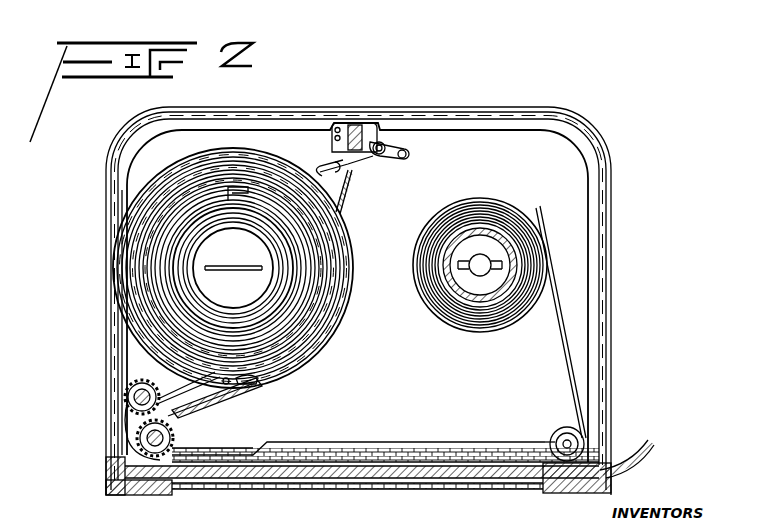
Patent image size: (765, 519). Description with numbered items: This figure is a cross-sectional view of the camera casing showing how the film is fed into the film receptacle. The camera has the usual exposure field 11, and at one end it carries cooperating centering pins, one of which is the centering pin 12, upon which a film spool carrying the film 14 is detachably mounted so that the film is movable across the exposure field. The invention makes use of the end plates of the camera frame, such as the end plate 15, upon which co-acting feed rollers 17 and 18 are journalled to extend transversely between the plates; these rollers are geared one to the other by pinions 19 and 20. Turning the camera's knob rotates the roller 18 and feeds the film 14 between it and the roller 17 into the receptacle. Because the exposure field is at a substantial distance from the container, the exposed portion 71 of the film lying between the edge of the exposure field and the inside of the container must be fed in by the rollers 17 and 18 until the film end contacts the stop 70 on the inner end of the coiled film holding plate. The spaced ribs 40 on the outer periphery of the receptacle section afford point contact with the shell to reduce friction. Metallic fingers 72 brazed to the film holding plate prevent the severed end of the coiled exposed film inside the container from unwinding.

The exposure field 11 is at (258, 478).
The centering pin 12 is at (482, 265).
The film 14 is at (562, 346).
The end plate 15 is at (372, 388).
The feed roller 17 is at (138, 395).
The feed roller 18 is at (150, 438).
The pinion 19 is at (158, 382).
The pinion 20 is at (178, 436).
The ribs 40 is at (120, 235).
The stop 70 is at (226, 194).
The exposed portion of the film 71 is at (140, 425).
The metallic fingers 72 is at (258, 386).